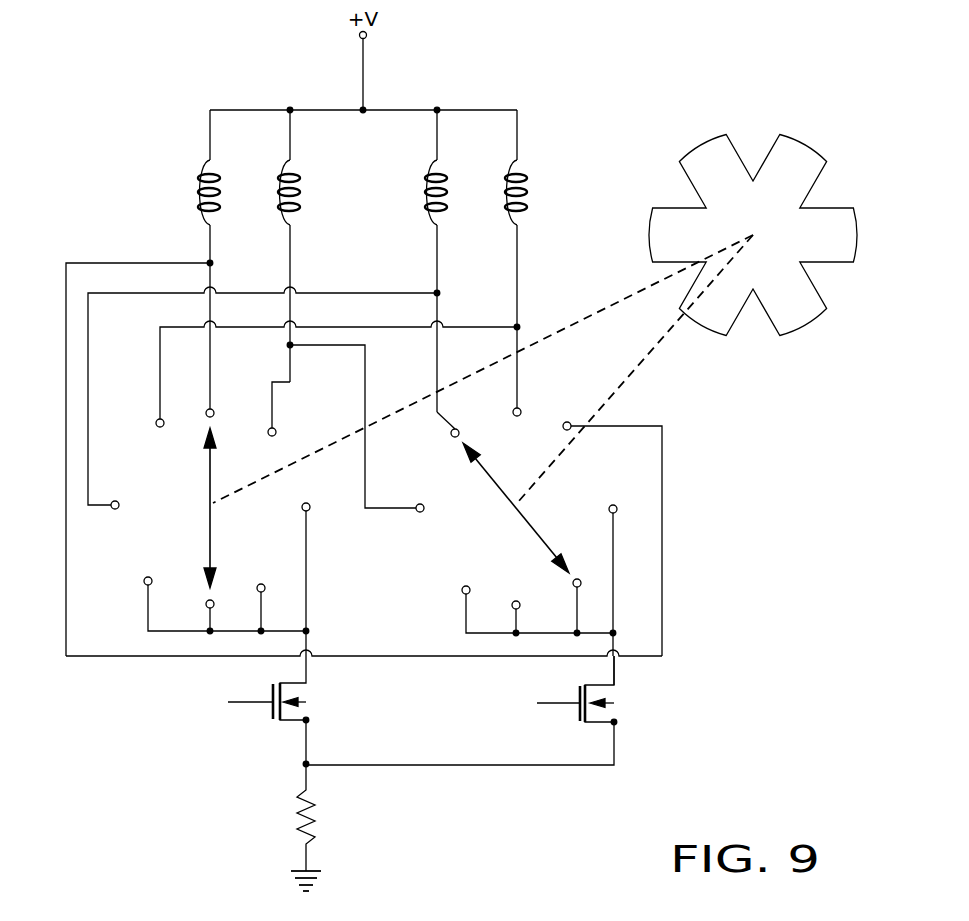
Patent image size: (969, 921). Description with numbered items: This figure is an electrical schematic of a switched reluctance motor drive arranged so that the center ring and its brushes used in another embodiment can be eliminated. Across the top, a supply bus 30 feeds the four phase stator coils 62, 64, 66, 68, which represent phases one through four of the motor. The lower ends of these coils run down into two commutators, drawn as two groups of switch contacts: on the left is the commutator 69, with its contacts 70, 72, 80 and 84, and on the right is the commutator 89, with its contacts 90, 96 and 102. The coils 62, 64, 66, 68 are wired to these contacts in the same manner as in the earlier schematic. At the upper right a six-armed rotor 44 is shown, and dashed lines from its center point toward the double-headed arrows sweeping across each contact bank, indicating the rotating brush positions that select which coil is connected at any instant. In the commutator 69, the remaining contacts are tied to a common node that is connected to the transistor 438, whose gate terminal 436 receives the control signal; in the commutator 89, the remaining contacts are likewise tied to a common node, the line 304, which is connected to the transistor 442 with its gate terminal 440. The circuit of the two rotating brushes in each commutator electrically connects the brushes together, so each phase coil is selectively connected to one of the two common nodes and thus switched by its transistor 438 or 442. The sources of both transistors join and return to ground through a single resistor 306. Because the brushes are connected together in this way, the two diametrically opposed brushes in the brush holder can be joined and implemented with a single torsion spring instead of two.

The motor winding supply bus 30 is at (467, 108).
The rotor 44 is at (747, 140).
The phase 1 stator coil 62 is at (200, 166).
The phase 2 stator coil 64 is at (300, 194).
The phase 3 stator coil 66 is at (428, 196).
The phase 4 stator coil 68 is at (528, 196).
The commutator 69 is at (55, 320).
The contact 70 is at (215, 409).
The switch contact 72 is at (278, 432).
The contact 80 is at (113, 512).
The contact 84 is at (157, 420).
The commutator 89 is at (690, 494).
The contact 90 is at (569, 420).
The contact 96 is at (420, 518).
The contact 102 is at (522, 409).
The line 304 is at (616, 675).
The resistor 306 is at (316, 812).
The gate terminal 436 is at (247, 705).
The transistor 438 is at (270, 692).
The gate terminal 440 is at (557, 706).
The transistor 442 is at (578, 692).